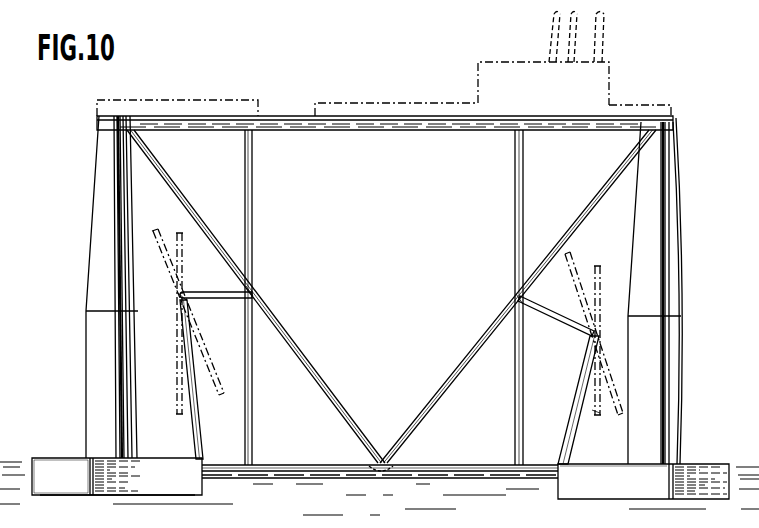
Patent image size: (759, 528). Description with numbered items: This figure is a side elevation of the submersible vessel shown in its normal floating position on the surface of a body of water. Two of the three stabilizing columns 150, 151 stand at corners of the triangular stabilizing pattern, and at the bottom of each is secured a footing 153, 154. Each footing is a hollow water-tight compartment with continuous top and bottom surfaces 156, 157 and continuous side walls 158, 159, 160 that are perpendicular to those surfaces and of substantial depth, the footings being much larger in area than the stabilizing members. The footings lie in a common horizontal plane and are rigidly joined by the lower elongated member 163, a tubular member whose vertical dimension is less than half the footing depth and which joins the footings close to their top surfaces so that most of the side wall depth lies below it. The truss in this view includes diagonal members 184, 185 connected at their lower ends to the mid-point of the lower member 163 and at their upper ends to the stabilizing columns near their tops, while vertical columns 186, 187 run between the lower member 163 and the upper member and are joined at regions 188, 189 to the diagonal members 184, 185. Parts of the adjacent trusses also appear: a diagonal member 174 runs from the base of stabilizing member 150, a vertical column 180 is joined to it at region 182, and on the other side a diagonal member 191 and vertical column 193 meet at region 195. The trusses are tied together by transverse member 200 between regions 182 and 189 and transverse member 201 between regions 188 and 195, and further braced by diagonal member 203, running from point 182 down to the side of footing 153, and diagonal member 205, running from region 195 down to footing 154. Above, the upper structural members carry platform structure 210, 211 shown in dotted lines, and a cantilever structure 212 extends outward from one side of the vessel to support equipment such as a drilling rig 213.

The stabilizing column 150 is at (682, 272).
The stabilizing column 151 is at (86, 271).
The footing 153 is at (641, 496).
The footing 154 is at (99, 499).
The top surface 156 is at (117, 476).
The bottom surface 157 is at (80, 496).
The side wall 158 is at (177, 470).
The side wall 159 is at (581, 492).
The side wall 160 is at (47, 485).
The elongated member 163 is at (459, 464).
The diagonal member 174 is at (595, 420).
The vertical column 180 is at (601, 278).
The region 182 is at (619, 321).
The diagonal member 184 is at (307, 364).
The diagonal member 185 is at (456, 354).
The vertical column 186 is at (253, 194).
The vertical column 187 is at (516, 206).
The region 188 is at (256, 292).
The region 189 is at (516, 300).
The diagonal member 191 is at (210, 352).
The vertical column 193 is at (176, 364).
The region 195 is at (177, 298).
The transverse member 200 is at (556, 320).
The transverse member 201 is at (212, 292).
The diagonal member 203 is at (568, 418).
The diagonal member 205 is at (203, 441).
The platform structure 210 is at (409, 103).
The platform structure 211 is at (172, 100).
The cantilever structure 212 is at (611, 90).
The drilling rig 213 is at (606, 30).